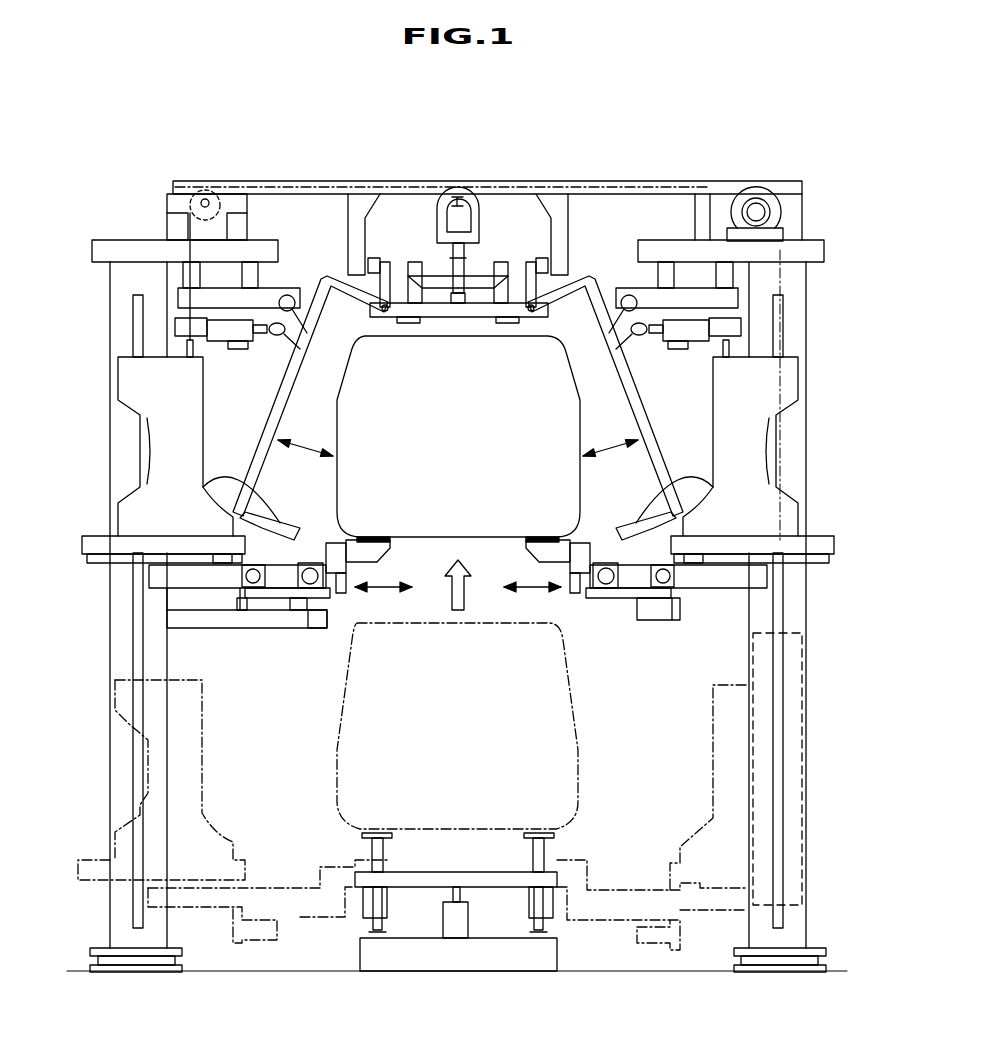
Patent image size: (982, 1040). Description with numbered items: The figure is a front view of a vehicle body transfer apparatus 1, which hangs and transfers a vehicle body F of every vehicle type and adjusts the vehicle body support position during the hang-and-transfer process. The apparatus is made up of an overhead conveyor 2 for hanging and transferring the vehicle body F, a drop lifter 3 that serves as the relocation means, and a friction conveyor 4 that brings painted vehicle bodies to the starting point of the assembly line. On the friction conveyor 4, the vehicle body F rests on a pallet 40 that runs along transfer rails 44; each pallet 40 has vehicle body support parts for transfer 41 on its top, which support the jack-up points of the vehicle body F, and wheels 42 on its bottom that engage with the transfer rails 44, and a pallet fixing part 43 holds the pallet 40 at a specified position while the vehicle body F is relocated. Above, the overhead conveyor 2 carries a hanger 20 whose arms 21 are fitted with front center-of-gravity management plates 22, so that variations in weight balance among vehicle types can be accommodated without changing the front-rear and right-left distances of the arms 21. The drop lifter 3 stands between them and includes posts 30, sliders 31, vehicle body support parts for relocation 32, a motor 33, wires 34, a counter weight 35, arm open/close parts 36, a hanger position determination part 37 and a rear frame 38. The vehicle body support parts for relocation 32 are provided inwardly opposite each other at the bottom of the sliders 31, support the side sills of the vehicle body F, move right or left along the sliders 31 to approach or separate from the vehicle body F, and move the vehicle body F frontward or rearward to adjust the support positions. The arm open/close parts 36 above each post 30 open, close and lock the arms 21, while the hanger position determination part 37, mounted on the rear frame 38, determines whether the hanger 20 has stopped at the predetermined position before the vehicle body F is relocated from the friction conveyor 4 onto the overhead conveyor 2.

The vehicle body transfer apparatus 1 is at (219, 130).
The overhead conveyor 2 is at (605, 259).
The drop lifter 3 is at (111, 197).
The friction conveyor 4 is at (600, 948).
The vehicle body F is at (400, 373).
The hanger 20 is at (525, 288).
The arm 21 is at (241, 432).
The front center-of-gravity management plate 22 is at (203, 487).
The post 30 is at (120, 635).
The slider 31 is at (167, 452).
The vehicle body support part for relocation 32 is at (392, 558).
The motor 33 is at (756, 198).
The wire 34 is at (187, 249).
The counter weight 35 is at (793, 765).
The arm open/close part 36 is at (237, 333).
The hanger position determination part 37 is at (322, 641).
The rear frame 38 is at (220, 621).
The pallet 40 is at (445, 880).
The vehicle body support part for transfer 41 is at (392, 843).
The wheel 42 is at (362, 920).
The pallet fixing part 43 is at (467, 900).
The transfer rail 44 is at (378, 936).